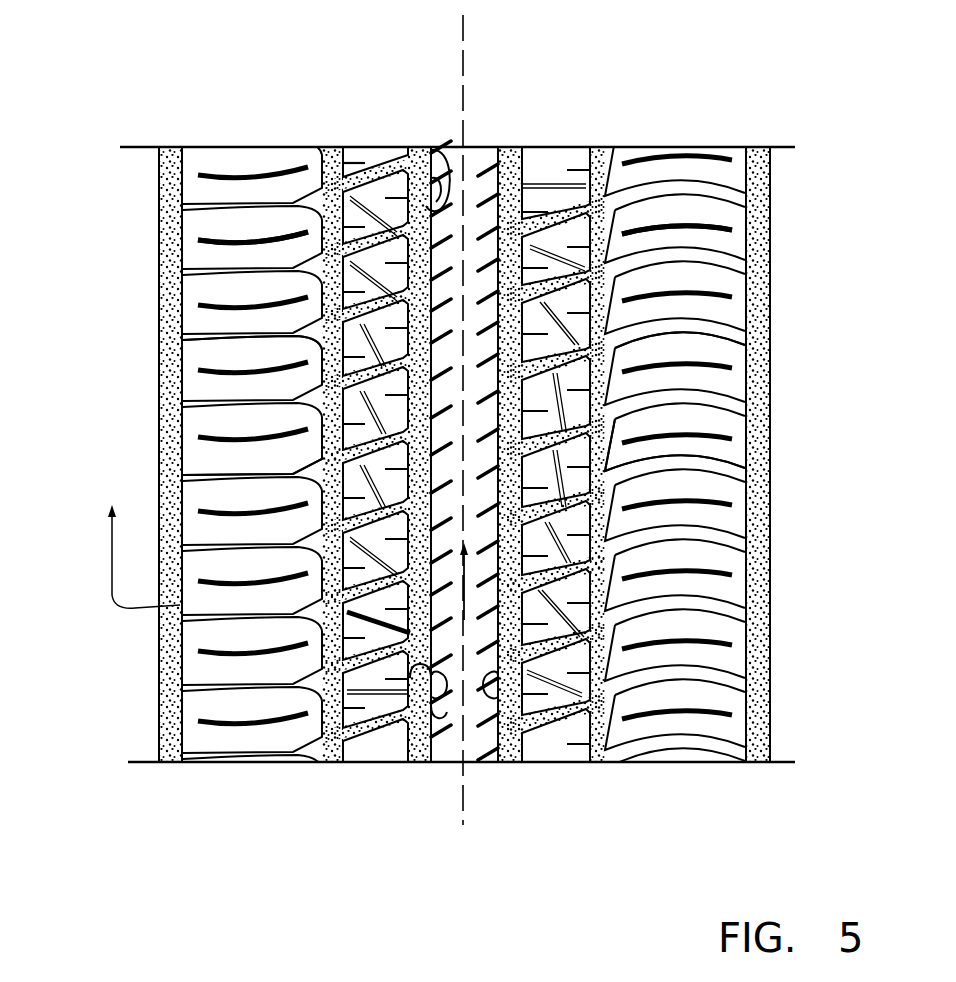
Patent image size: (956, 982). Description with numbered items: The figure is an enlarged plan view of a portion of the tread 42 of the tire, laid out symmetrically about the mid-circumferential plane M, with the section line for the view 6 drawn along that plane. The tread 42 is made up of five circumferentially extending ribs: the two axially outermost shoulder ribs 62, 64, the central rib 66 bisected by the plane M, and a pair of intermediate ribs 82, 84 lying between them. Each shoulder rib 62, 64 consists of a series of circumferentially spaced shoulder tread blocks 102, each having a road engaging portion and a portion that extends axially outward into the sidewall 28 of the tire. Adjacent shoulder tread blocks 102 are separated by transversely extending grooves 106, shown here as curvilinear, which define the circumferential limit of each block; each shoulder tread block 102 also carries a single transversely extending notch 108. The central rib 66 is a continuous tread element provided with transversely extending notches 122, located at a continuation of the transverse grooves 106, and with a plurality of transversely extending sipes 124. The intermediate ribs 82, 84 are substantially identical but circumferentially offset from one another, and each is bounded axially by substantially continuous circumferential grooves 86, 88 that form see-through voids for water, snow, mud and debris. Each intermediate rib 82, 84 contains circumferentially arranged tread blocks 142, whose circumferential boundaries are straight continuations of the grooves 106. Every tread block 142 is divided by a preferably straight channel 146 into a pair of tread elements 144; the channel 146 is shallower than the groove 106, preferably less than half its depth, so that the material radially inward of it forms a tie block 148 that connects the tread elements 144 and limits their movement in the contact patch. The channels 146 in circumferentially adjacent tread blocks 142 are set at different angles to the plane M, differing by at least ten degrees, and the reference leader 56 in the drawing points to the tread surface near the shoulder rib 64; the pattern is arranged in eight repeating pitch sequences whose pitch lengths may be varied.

The sidewall 28 is at (170, 712).
The tread 42 is at (580, 143).
The transverse rib 56 is at (614, 158).
The axially outermost rib 62 is at (228, 132).
The axially outermost rib 64 is at (700, 140).
The central rib 66 is at (493, 135).
The left intermediate rib 82 is at (352, 140).
The right intermediate rib 84 is at (542, 142).
The groove 86 is at (310, 212).
The groove 88 is at (421, 158).
The shoulder tread block 102 is at (197, 313).
The transversely extending groove 106 is at (203, 473).
The transversely extending notch 108 is at (193, 364).
The transversely extending notch 122 is at (440, 150).
The transversely extending sipe 124 is at (393, 150).
The tread block 142 is at (335, 737).
The tread element 144 is at (383, 705).
The channel 146 is at (432, 725).
The tie block 148 is at (447, 760).
The section line 6- 6 is at (287, 545).
The mid-circumferential plane M is at (465, 97).